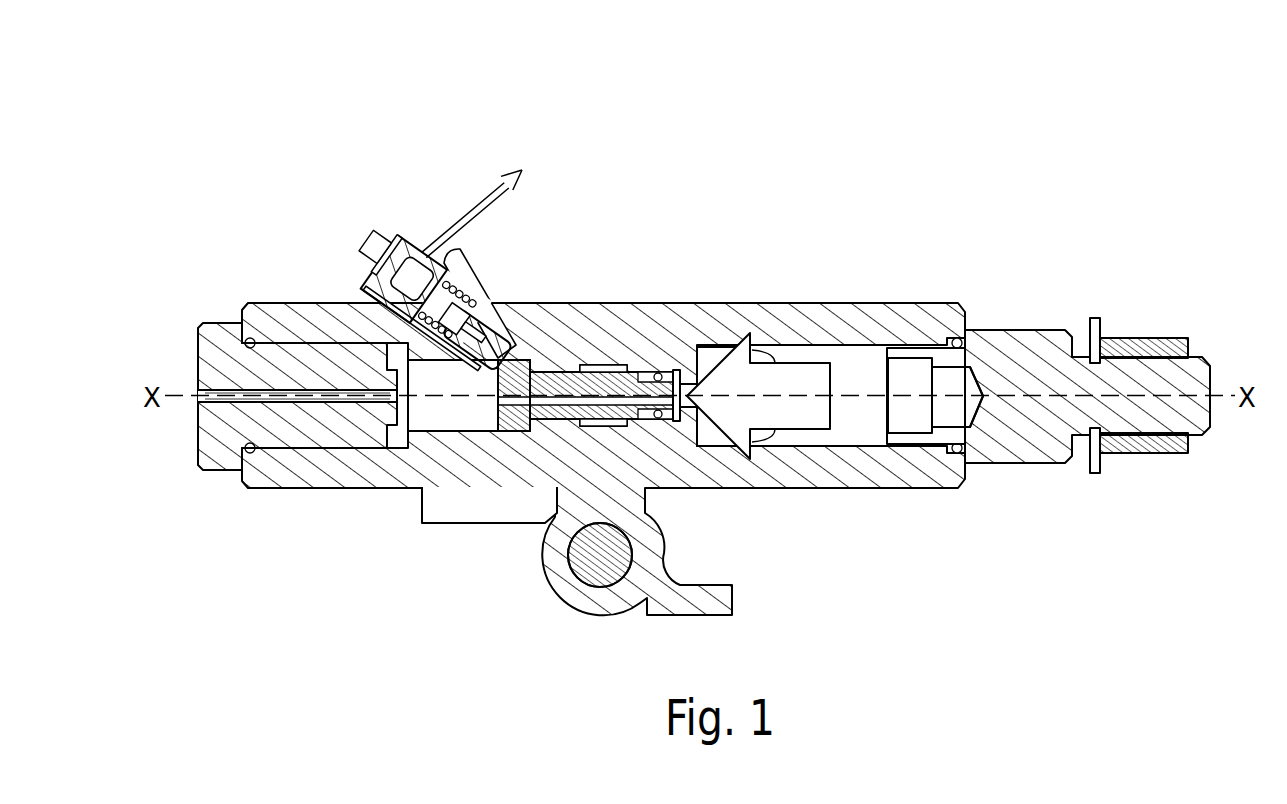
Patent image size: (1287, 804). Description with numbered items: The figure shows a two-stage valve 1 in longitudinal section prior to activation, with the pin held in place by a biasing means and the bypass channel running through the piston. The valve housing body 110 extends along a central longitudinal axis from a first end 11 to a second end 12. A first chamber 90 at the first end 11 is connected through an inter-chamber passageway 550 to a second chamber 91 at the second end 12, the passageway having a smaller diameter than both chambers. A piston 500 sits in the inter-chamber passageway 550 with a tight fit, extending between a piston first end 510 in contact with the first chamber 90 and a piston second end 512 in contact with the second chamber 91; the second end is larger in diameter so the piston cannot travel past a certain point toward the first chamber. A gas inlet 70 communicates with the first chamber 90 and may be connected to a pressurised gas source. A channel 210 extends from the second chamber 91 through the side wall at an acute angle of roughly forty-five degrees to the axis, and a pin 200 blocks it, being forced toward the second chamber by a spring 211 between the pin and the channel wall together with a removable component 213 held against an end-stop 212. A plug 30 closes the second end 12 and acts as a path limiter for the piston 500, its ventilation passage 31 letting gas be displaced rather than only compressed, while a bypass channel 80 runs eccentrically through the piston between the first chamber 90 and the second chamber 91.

The two-stage valve 1 is at (262, 130).
The first end 11 is at (608, 432).
The second end 12 is at (243, 309).
The plug 30 is at (289, 430).
The ventilation passage 31 is at (232, 399).
The gas inlet 70 is at (763, 358).
The bypass channel 80 is at (625, 412).
The first chamber 90 is at (862, 415).
The second chamber 91 is at (452, 418).
The valve housing body 110 is at (943, 475).
The pin 200 is at (441, 254).
The channel 210 is at (455, 287).
The spring 211 is at (566, 363).
The end-stop 212 is at (450, 283).
The removable component 213 is at (400, 266).
The piston 500 is at (588, 420).
The piston first end 510 is at (680, 390).
The piston second end 512 is at (507, 430).
The inter-chamber passageway 550 is at (660, 373).